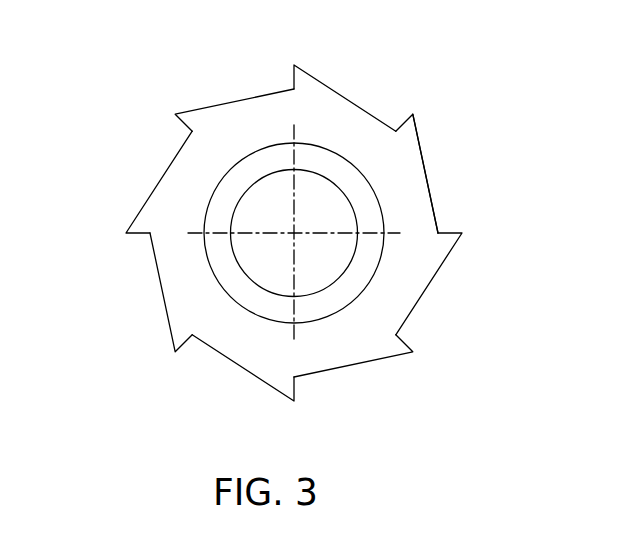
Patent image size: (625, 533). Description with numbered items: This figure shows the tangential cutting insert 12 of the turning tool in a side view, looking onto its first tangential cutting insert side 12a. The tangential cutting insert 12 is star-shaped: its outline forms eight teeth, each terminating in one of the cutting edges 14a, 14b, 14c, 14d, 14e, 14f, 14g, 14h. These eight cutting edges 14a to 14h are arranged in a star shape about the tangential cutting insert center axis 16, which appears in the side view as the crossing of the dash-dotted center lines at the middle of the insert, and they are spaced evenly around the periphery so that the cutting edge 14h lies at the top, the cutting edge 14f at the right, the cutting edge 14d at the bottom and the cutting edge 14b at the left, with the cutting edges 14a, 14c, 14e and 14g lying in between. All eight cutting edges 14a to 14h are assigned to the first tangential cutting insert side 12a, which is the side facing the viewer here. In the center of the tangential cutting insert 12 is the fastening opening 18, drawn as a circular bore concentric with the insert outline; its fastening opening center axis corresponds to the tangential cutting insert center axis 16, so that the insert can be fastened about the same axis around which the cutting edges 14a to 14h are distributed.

The tangential cutting insert 12 is at (280, 230).
The first tangential cutting insert side 12a is at (395, 147).
The cutting edge 14a is at (180, 108).
The cutting edge 14b is at (126, 233).
The cutting edge 14c is at (172, 353).
The cutting edge 14d is at (290, 404).
The cutting edge 14e is at (417, 356).
The cutting edge 14f is at (466, 231).
The cutting edge 14g is at (420, 112).
The cutting edge 14h is at (298, 60).
The tangential cutting insert center axis 16 is at (298, 240).
The fastening opening 18 is at (327, 224).